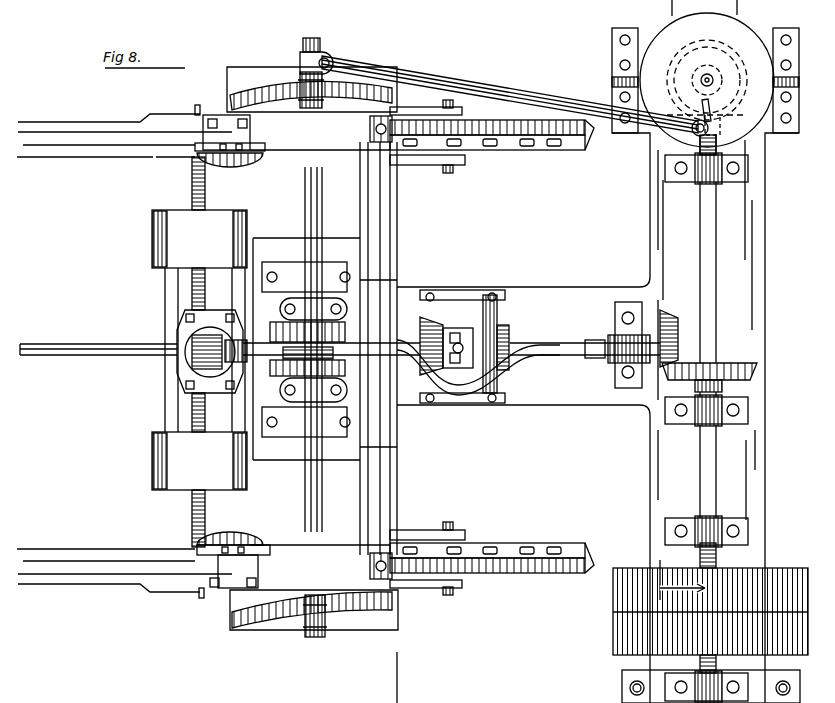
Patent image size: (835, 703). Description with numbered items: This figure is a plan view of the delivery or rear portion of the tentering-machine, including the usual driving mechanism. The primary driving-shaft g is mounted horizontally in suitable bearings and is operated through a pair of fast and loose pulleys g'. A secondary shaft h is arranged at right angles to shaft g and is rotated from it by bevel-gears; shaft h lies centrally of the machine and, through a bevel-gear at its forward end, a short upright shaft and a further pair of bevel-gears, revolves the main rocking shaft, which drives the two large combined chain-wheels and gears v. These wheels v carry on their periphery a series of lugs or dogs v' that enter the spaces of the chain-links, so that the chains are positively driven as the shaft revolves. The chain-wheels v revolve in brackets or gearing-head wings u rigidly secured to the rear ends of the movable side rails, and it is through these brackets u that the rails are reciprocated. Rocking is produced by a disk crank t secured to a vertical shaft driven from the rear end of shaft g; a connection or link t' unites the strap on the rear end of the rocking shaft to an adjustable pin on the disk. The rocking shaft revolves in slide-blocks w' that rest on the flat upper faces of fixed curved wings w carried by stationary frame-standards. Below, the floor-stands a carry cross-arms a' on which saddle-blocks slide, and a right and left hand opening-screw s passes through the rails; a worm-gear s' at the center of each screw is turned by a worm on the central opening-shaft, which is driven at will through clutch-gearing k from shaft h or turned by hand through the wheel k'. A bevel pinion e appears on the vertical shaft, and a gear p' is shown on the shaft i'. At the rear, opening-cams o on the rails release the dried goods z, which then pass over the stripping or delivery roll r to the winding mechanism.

The disk crank t is at (707, 73).
The connection or link t' is at (515, 96).
The brackets or gearing-head wings u is at (440, 108).
The combined chain-wheels and gears v is at (482, 347).
The lugs or dogs v' is at (482, 346).
The fixed curved wings w is at (330, 346).
The slide-blocks w' is at (311, 352).
The rear opening-cams o is at (238, 165).
The right and left hand opening-screw s is at (180, 352).
The worm-gear s' is at (189, 351).
The floor-stands a is at (189, 350).
The cross-arm a' is at (203, 353).
The secondary shaft h is at (570, 343).
The vertical shaft i' is at (302, 349).
The stripping or delivery roll r is at (397, 485).
The clutch-gearing k is at (473, 319).
The wheel k' is at (503, 326).
The gear p' is at (301, 356).
The primary driving-shaft g is at (709, 418).
The fast and loose pulleys g' is at (696, 611).
The bevel pinion e is at (662, 384).
The wet goods z is at (406, 677).